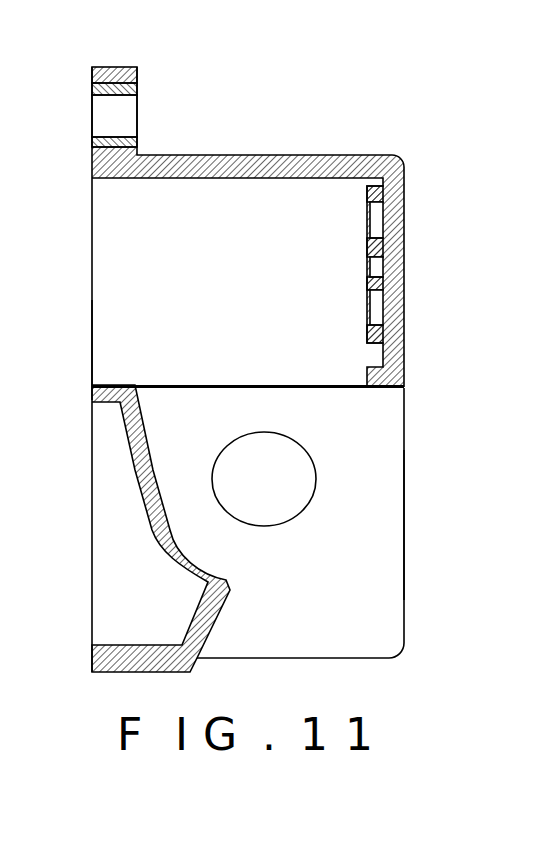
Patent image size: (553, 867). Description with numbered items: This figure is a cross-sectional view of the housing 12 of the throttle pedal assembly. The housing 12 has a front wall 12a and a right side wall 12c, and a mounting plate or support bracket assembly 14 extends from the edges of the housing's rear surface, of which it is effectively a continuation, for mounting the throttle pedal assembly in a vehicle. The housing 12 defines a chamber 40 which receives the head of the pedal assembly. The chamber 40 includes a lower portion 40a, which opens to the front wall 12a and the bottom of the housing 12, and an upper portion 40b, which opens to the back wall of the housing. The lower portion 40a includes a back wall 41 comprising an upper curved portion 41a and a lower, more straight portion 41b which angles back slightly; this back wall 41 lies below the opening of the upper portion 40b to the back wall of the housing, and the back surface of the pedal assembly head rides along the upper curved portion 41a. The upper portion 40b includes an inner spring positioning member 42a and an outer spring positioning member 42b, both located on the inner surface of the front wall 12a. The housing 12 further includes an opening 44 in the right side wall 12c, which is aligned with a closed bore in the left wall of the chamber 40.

The housing 12 is at (402, 133).
The front wall 12a is at (404, 285).
The right side wall 12c is at (385, 416).
The mounting plate or support bracket assembly 14 is at (137, 79).
The chamber 40 is at (295, 528).
The lower portion of chamber 40a is at (383, 542).
The upper portion of chamber 40b is at (118, 296).
The back wall 41 is at (201, 528).
The upper curved portion 41a is at (195, 558).
The lower, more straight portion 41b is at (222, 607).
The inner spring positioning member 42a is at (367, 281).
The outer spring positioning member 42b is at (367, 192).
The opening 44 is at (286, 437).